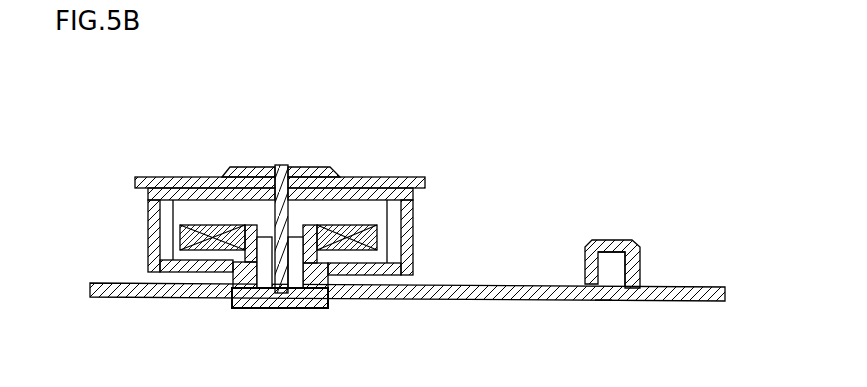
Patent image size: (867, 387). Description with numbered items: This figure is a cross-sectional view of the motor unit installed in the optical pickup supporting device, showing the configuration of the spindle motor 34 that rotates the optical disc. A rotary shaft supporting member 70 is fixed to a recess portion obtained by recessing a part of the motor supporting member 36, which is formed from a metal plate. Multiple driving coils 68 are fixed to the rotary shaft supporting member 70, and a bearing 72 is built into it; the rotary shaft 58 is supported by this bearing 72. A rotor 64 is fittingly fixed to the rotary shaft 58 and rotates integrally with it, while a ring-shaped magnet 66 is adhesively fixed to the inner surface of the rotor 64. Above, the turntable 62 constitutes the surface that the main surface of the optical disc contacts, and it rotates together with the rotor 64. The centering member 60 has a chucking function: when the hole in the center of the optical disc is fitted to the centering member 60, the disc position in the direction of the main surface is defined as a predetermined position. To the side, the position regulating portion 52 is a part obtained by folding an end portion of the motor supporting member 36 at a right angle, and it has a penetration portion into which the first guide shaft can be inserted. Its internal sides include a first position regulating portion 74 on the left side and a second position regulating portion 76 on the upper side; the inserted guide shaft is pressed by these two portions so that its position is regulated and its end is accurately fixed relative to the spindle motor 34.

The spindle motor 34 is at (218, 126).
The motor supporting member 36 is at (115, 299).
The position regulating portion 52 is at (607, 240).
The rotary shaft 58 is at (279, 166).
The centering member 60 is at (337, 167).
The turntable 62 is at (141, 177).
The rotor 64 is at (148, 240).
The ring-shaped magnet 66 is at (401, 217).
The driving coils 68 is at (380, 245).
The rotary shaft supporting member 70 is at (337, 309).
The bearing 72 is at (267, 309).
The first position regulating portion 74 is at (603, 301).
The second position regulating portion 76 is at (612, 254).